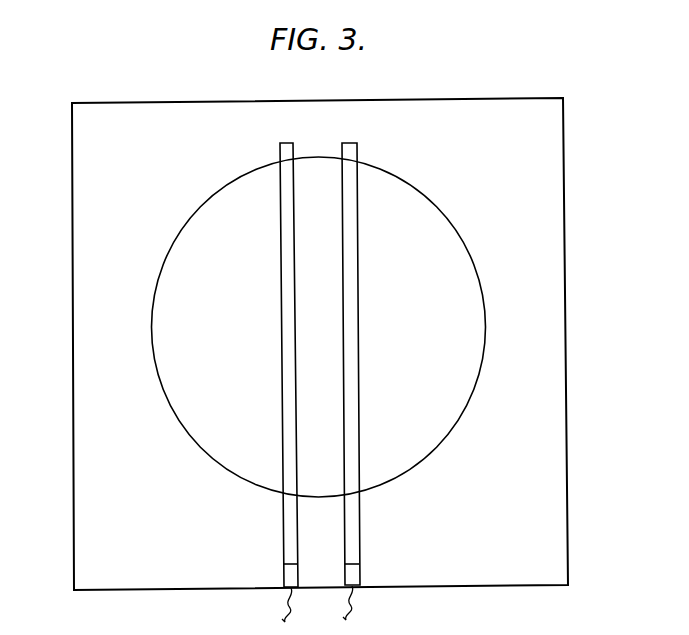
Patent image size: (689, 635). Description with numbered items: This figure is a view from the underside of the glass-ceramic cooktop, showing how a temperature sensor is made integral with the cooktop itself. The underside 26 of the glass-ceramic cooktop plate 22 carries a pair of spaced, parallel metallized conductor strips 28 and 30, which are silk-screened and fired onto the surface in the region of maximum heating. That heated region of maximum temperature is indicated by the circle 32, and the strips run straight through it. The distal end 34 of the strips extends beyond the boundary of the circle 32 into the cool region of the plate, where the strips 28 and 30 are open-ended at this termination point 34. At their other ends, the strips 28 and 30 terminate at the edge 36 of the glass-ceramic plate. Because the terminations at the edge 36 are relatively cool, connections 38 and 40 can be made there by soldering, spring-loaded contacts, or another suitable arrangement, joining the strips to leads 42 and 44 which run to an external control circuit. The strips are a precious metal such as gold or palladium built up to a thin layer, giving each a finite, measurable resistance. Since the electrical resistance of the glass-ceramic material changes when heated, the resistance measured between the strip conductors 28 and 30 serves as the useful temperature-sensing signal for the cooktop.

The glass-ceramic cooktop plate 22 is at (565, 133).
The underside 26 is at (533, 234).
The metallized conductor strip 28 is at (286, 247).
The metallized conductor strip 30 is at (349, 248).
The circle 32 is at (395, 178).
The distal end 34 is at (318, 143).
The edge 36 is at (468, 586).
The connection 38 is at (287, 576).
The connection 40 is at (356, 576).
The lead 42 is at (285, 602).
The lead 44 is at (356, 603).